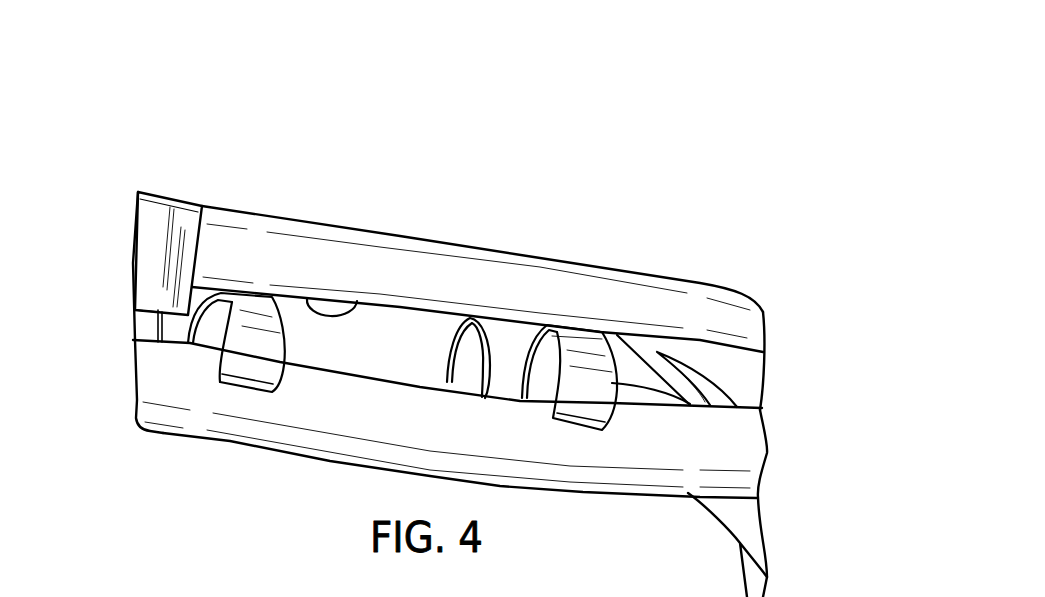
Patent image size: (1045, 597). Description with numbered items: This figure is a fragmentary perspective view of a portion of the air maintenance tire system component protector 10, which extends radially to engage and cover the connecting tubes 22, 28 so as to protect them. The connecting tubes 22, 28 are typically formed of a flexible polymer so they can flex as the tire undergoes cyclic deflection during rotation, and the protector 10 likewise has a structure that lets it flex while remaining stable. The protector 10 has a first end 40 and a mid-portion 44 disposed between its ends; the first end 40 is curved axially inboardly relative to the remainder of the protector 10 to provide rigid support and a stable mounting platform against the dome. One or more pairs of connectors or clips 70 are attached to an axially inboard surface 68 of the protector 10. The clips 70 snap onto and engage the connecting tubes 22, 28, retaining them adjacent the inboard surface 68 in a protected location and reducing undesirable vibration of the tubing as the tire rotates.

The air maintenance tire system component protector 10 is at (492, 223).
The connecting tube 22 is at (580, 492).
The connecting tube 28 is at (632, 383).
The first end 40 is at (757, 328).
The mid-portion 44 is at (225, 222).
The axially inboard surface 68 is at (355, 300).
The connectors or clips 70 is at (158, 320).